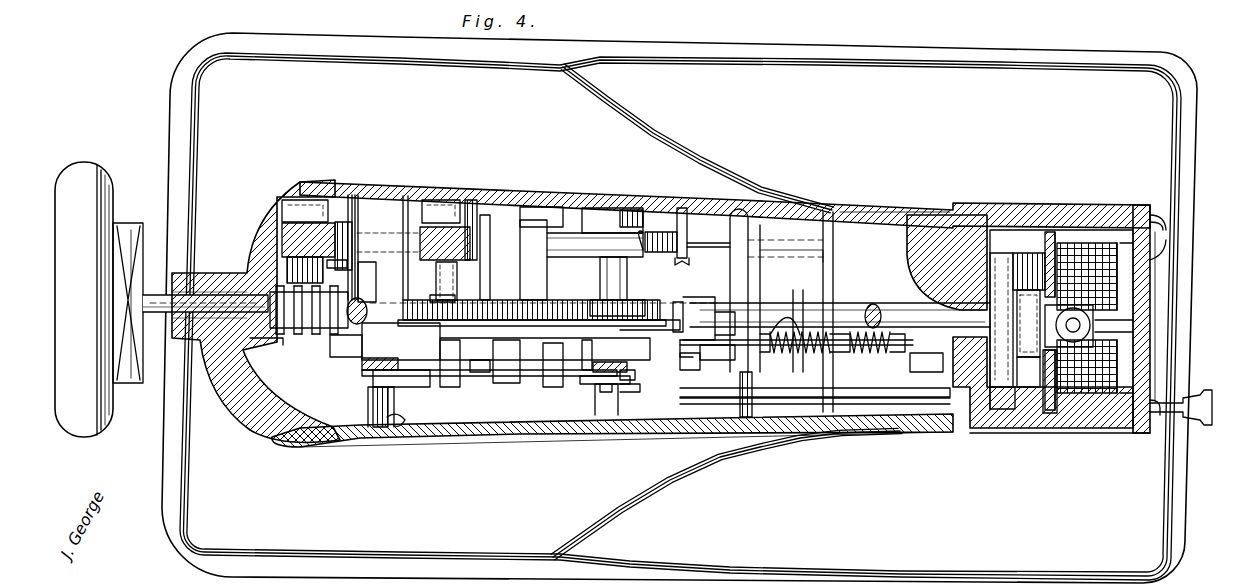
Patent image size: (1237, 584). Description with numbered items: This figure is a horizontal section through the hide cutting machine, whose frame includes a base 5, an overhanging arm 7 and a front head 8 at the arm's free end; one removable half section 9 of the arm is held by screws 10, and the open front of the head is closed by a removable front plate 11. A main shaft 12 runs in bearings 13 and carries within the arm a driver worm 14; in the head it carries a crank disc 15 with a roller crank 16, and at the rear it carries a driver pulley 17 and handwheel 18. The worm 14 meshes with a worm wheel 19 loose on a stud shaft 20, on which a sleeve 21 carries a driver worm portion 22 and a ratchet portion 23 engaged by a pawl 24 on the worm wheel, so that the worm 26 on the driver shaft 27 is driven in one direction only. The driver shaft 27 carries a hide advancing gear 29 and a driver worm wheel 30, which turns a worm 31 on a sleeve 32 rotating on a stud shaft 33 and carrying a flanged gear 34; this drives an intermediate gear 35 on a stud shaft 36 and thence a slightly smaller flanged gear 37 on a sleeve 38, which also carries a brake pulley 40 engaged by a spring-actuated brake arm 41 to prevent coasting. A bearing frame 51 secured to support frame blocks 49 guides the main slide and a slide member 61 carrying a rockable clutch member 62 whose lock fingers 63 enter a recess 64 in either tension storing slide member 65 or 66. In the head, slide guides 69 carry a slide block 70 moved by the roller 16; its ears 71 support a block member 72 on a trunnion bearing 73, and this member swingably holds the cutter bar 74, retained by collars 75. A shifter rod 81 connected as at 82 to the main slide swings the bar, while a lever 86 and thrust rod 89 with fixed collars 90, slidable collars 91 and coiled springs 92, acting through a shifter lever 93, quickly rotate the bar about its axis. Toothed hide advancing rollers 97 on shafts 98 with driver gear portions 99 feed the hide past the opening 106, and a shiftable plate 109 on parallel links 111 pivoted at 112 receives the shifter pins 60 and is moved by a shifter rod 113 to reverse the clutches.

The base 5 is at (679, 308).
The overhanging arm 7 is at (818, 205).
The front head 8 is at (970, 400).
The removable half section 9 is at (625, 428).
The screws 10 is at (398, 428).
The removable front plate 11 is at (1153, 222).
The main shaft 12 is at (895, 302).
The bearings 13 is at (250, 340).
The driver worm 14 is at (300, 332).
The crank disc 15 is at (1025, 262).
The roller crank 16 is at (1052, 262).
The driver pulley 17 is at (120, 290).
The handwheel 18 is at (84, 299).
The worm wheel 19 is at (255, 303).
The stud shaft 20 is at (290, 205).
The sleeve 21 is at (275, 240).
The driver worm portion 22 is at (350, 205).
The ratchet portion 23 is at (250, 262).
The pawl 24 is at (338, 287).
The worm 26 is at (313, 200).
The driver shaft 27 is at (850, 240).
The hide advancing gear 29 is at (1000, 260).
The driver worm wheel 30 is at (428, 200).
The column 31 is at (480, 235).
The sleeve 32 is at (430, 270).
The stud shaft 33 is at (470, 212).
The flanged gear 34 is at (435, 298).
The intermediate gear 35 is at (503, 315).
The stud shaft 36 is at (515, 370).
The flanged gear 37 is at (643, 308).
The sleeve 38 is at (615, 277).
The brake pulley 40 is at (620, 230).
The spring-actuated brake arm 41 is at (572, 240).
The support frame blocks 49 is at (385, 205).
The bearing frame 51 is at (365, 355).
The shifter pin 60 is at (462, 368).
The slide member 61 is at (345, 350).
The rockable clutch member 62 is at (550, 385).
The lock fingers 63 is at (455, 385).
The slot or recess 64 is at (442, 343).
The tension storing and releasing slide member 65 is at (401, 341).
The tension storing and releasing slide member 66 is at (676, 320).
The slide guide 69 is at (1095, 245).
The slide block 70 is at (1000, 318).
The ears 71 is at (1120, 290).
The block member 72 is at (1110, 345).
The trunnion bearing 73 is at (1055, 410).
The cutter bar 74 is at (1025, 400).
The collars 75 is at (1095, 315).
The shifter rod 81 is at (705, 310).
The connection 82 is at (712, 365).
The lever 86 is at (930, 410).
The thrust rod 89 is at (742, 320).
The fixed collars 90 is at (768, 352).
The slidable collars 91 is at (838, 392).
The tension storing coiled spring 92 is at (802, 360).
The shifter lever 93 is at (866, 312).
The toothed hide advancing roller 97 is at (1165, 240).
The shaft 98 is at (1160, 250).
The driver gear portion 99 is at (1000, 410).
The opening 106 is at (1100, 325).
The shiftable plate 109 is at (495, 380).
The parallel links 111 is at (390, 388).
The pivot 112 is at (370, 395).
The shifter rod 113 is at (1160, 420).